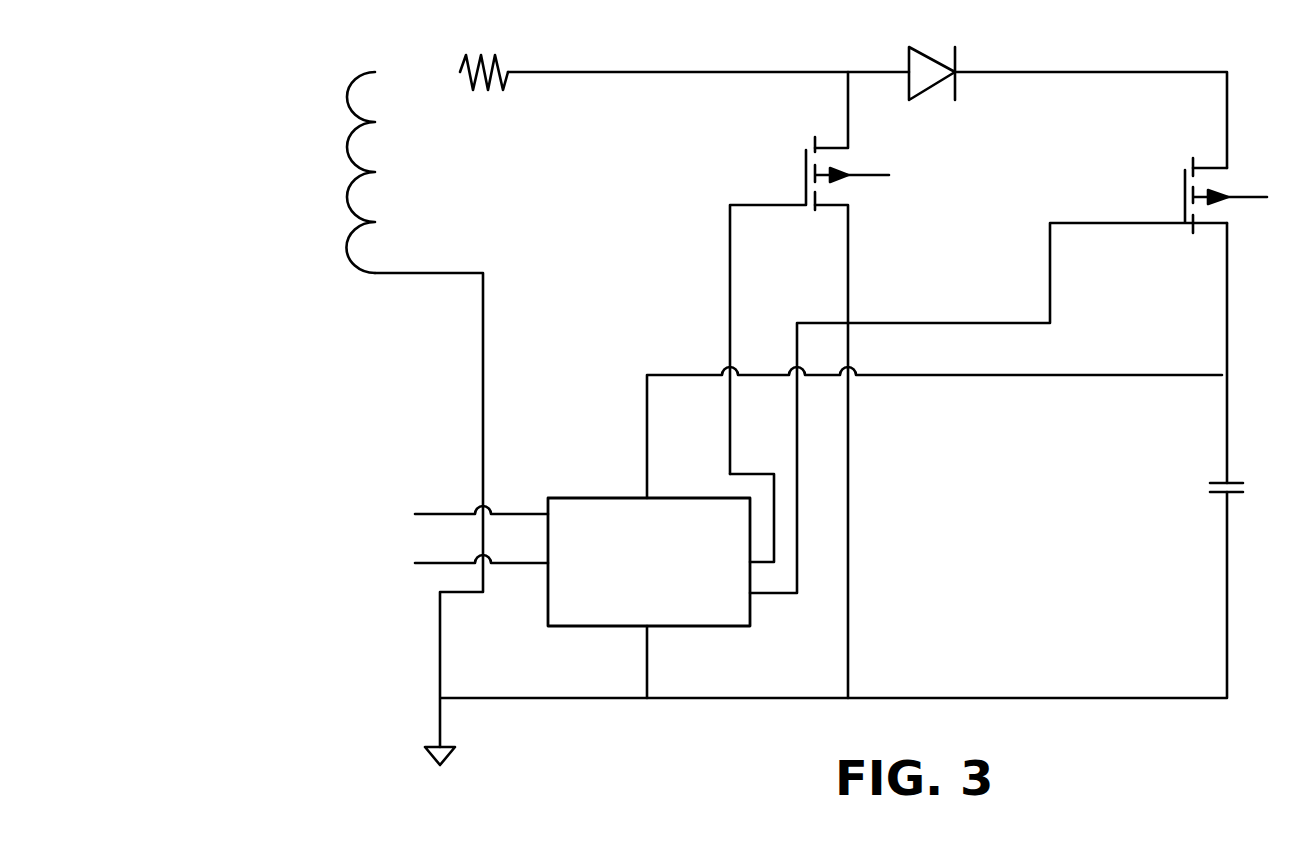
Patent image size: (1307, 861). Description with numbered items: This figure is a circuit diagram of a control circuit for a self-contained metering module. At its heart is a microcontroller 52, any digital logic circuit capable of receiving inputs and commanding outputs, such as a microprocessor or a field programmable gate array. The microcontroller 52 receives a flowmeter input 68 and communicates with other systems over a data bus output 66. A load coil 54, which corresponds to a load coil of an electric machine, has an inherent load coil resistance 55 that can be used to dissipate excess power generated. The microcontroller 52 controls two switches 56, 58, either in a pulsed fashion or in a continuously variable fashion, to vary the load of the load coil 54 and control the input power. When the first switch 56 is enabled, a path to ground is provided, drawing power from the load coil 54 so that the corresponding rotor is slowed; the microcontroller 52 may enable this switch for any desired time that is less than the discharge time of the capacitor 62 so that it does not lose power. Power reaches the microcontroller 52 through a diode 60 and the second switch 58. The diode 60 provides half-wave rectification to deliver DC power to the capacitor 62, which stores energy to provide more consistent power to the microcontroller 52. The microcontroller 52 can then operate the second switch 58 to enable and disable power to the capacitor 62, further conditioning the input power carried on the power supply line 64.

The microcontroller 52 is at (649, 562).
The load coil 54 is at (375, 160).
The load coil resistance 55 is at (505, 62).
The switch 56 is at (800, 166).
The switch 58 is at (1183, 180).
The diode 60 is at (928, 55).
The capacitor 62 is at (1218, 483).
The power supply line 64 is at (1178, 375).
The data bus output 66 is at (528, 566).
The flowmeter input 68 is at (506, 512).